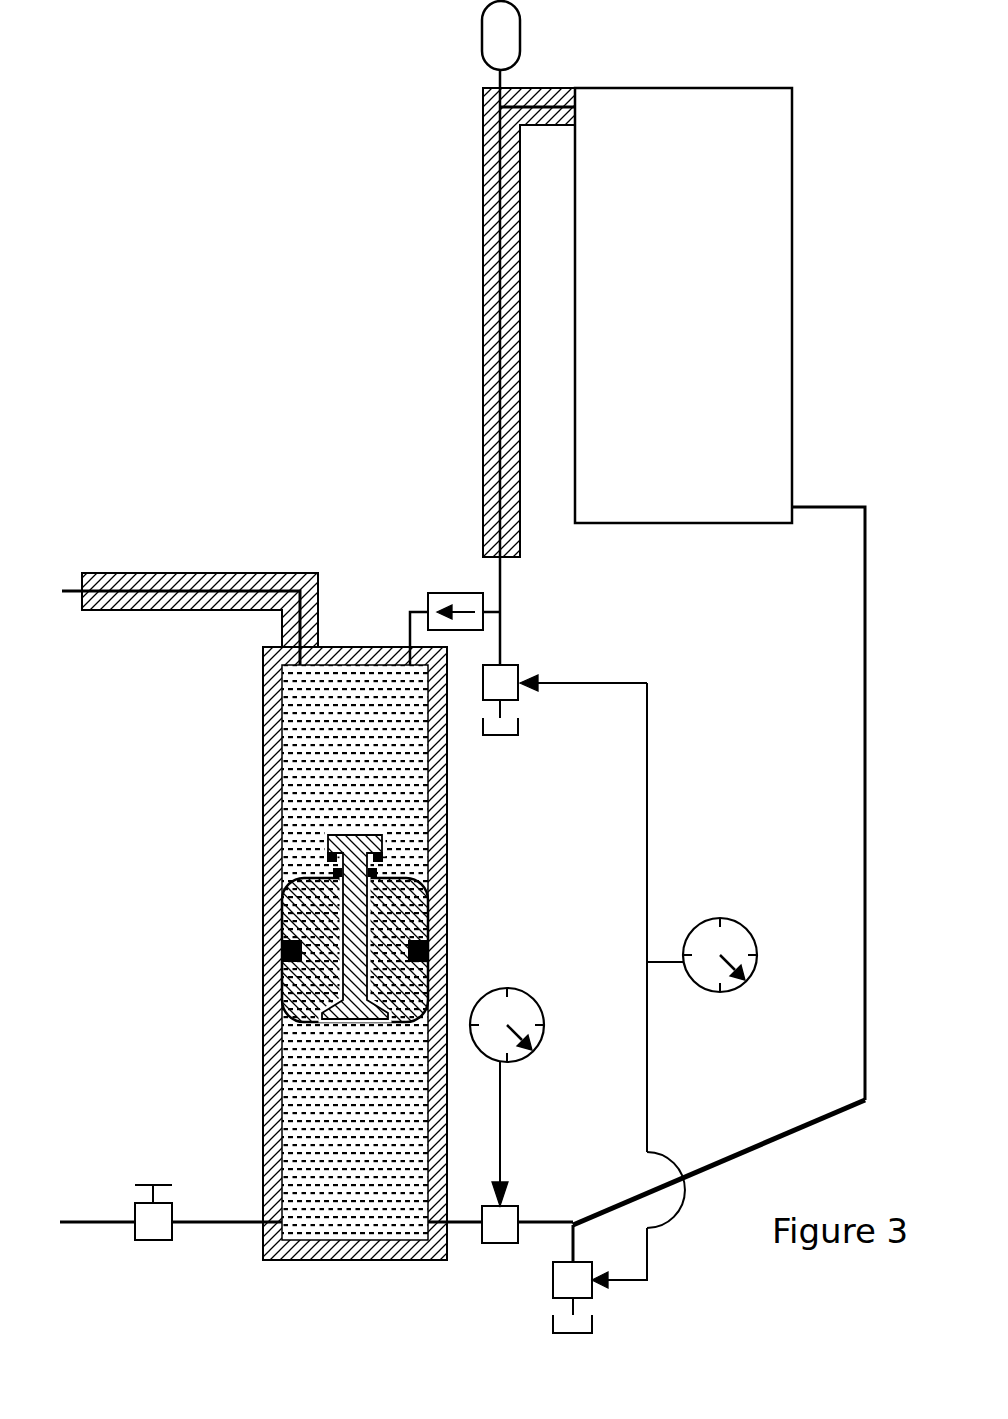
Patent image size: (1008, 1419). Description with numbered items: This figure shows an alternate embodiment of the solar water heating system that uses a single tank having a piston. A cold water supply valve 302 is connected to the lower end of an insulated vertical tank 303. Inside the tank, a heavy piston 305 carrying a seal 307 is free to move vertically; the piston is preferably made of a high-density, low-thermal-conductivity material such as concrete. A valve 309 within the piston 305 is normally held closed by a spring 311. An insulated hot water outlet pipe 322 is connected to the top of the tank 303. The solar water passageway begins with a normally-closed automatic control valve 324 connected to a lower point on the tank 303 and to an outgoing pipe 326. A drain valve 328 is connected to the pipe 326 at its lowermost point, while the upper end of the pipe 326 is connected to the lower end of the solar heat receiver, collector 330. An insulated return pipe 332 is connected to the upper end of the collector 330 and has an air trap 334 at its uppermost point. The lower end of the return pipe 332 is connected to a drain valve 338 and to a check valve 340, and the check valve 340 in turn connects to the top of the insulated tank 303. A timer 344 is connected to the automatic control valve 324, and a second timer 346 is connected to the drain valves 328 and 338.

The cold water supply valve 302 is at (152, 1240).
The insulated vertical tank 303 is at (263, 1103).
The heavy piston 305 is at (290, 1005).
The seal 307 is at (282, 948).
The valve 309 is at (355, 898).
The spring 311 is at (333, 870).
The insulated hot water outlet pipe 322 is at (183, 610).
The automatic control valve 324 is at (500, 1243).
The outgoing pipe 326 is at (780, 1135).
The drain valve 328 is at (553, 1280).
The collector 330 is at (793, 308).
The insulated return pipe 332 is at (483, 450).
The air trap 334 is at (520, 30).
The drain valve 338 is at (518, 668).
The check valve 340 is at (445, 593).
The timer 344 is at (518, 992).
The timer 346 is at (730, 918).